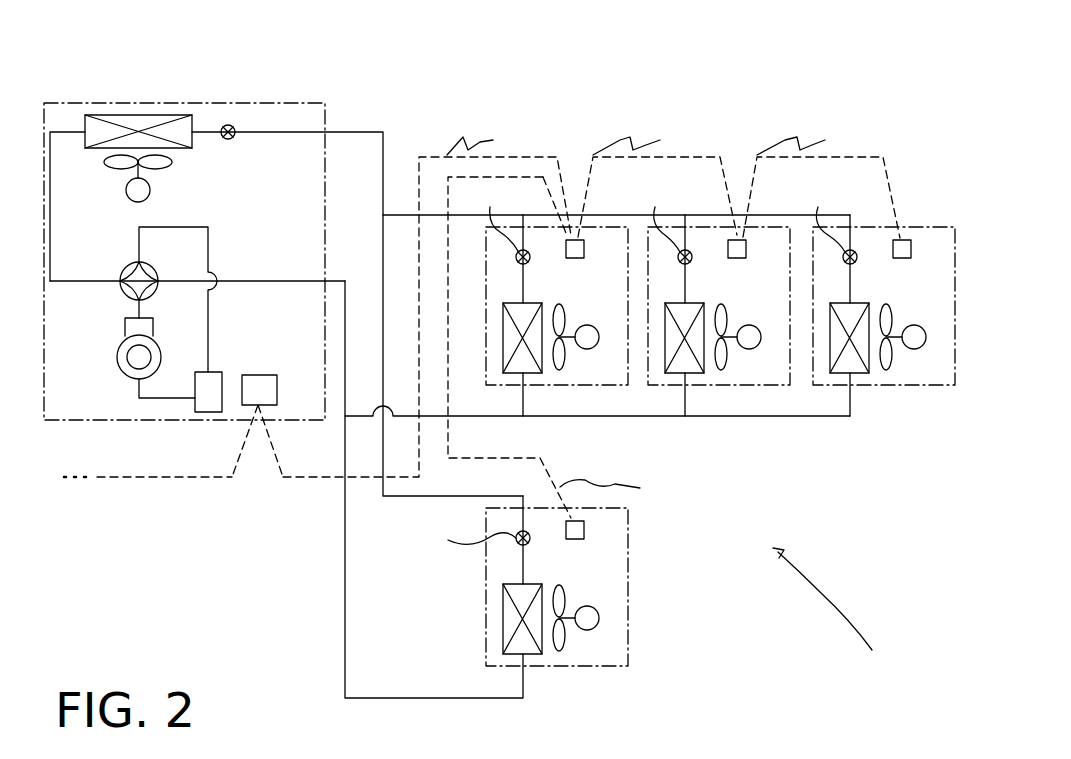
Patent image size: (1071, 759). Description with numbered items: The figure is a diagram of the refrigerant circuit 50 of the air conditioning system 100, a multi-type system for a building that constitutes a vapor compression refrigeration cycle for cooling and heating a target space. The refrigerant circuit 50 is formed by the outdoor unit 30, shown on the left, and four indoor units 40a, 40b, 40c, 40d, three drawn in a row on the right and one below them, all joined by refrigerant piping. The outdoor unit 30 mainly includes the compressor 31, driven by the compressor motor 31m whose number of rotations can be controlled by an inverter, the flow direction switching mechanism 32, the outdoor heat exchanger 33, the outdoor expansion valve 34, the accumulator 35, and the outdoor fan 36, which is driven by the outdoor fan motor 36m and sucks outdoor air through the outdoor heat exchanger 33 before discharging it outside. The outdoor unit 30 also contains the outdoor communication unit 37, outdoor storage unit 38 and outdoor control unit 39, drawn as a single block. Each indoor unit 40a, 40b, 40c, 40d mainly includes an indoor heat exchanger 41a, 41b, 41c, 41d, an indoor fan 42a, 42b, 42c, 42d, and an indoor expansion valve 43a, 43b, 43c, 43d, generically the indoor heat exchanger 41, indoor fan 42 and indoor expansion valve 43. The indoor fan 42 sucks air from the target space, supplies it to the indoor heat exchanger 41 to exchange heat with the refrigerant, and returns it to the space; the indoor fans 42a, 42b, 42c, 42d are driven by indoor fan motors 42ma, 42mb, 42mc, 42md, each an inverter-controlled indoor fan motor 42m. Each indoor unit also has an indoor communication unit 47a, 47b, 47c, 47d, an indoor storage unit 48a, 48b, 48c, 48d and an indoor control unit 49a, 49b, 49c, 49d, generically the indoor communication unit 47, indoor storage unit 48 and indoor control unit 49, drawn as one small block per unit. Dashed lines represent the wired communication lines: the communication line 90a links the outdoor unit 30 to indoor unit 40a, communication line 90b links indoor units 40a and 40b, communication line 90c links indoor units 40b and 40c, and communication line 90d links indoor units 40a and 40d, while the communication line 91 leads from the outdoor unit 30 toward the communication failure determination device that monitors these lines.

The outdoor unit 30 is at (78, 420).
The compressor 31 is at (128, 332).
The compressor motor 31m is at (117, 350).
The flow direction switching mechanism 32 is at (129, 266).
The outdoor heat exchanger 33 is at (182, 148).
The outdoor expansion valve 34 is at (229, 139).
The accumulator 35 is at (205, 412).
The outdoor fan 36 is at (142, 190).
The outdoor fan motor 36m is at (126, 190).
The outdoor communication unit 37 is at (267, 362).
The outdoor storage unit 38 is at (267, 362).
The outdoor control unit 39 is at (258, 375).
The indoor unit 40a is at (557, 255).
The indoor unit 40b is at (720, 256).
The indoor unit 40c is at (869, 267).
The indoor unit 40d is at (636, 606).
The indoor heat exchanger 41 is at (540, 300).
The indoor heat exchanger 41a is at (568, 275).
The indoor heat exchanger 41b is at (702, 300).
The indoor heat exchanger 41c is at (867, 300).
The indoor heat exchanger 41d is at (540, 581).
The indoor fan 42 is at (602, 351).
The indoor fan 42a is at (602, 351).
The indoor fan 42b is at (761, 351).
The indoor fan 42c is at (893, 379).
The indoor fan 42d is at (600, 633).
The indoor fan motor 42m is at (587, 349).
The indoor fan motor 42ma is at (602, 372).
The indoor fan motor 42mb is at (749, 349).
The indoor fan motor 42mc is at (930, 308).
The indoor fan motor 42md is at (587, 630).
The indoor expansion valve 43 is at (497, 218).
The indoor expansion valve 43a is at (497, 218).
The indoor expansion valve 43b is at (662, 218).
The indoor expansion valve 43c is at (827, 218).
The indoor expansion valve 43d is at (435, 539).
The indoor communication unit 47 is at (550, 159).
The indoor communication unit 47a is at (550, 159).
The indoor communication unit 47b is at (716, 159).
The indoor communication unit 47c is at (881, 159).
The indoor communication unit 47d is at (742, 525).
The indoor storage unit 48 is at (550, 159).
The indoor storage unit 48a is at (550, 159).
The indoor storage unit 48b is at (716, 159).
The indoor storage unit 48c is at (881, 159).
The indoor storage unit 48d is at (742, 525).
The indoor control unit 49 is at (584, 246).
The indoor control unit 49a is at (550, 159).
The indoor control unit 49b is at (747, 246).
The indoor control unit 49c is at (912, 250).
The indoor control unit 49d is at (584, 523).
The refrigerant circuit 50 is at (320, 567).
The communication line 90a is at (491, 142).
The communication line 90b is at (649, 139).
The communication line 90c is at (812, 139).
The communication line 90d is at (622, 484).
The communication line 91 is at (160, 479).
The air conditioning system 100 is at (846, 612).